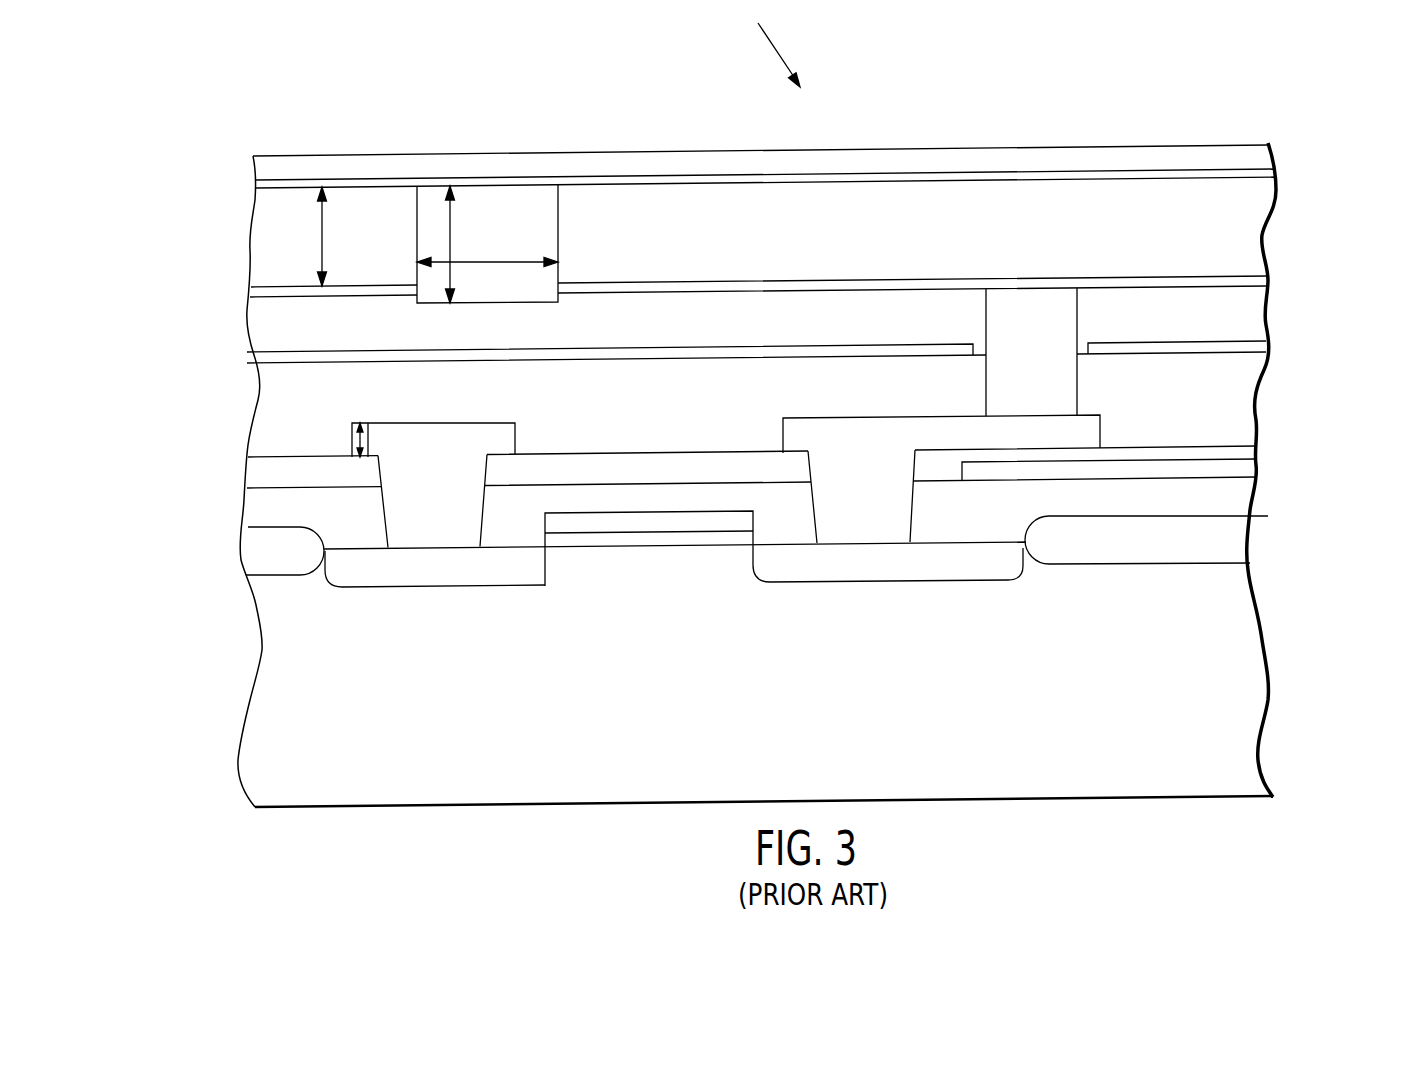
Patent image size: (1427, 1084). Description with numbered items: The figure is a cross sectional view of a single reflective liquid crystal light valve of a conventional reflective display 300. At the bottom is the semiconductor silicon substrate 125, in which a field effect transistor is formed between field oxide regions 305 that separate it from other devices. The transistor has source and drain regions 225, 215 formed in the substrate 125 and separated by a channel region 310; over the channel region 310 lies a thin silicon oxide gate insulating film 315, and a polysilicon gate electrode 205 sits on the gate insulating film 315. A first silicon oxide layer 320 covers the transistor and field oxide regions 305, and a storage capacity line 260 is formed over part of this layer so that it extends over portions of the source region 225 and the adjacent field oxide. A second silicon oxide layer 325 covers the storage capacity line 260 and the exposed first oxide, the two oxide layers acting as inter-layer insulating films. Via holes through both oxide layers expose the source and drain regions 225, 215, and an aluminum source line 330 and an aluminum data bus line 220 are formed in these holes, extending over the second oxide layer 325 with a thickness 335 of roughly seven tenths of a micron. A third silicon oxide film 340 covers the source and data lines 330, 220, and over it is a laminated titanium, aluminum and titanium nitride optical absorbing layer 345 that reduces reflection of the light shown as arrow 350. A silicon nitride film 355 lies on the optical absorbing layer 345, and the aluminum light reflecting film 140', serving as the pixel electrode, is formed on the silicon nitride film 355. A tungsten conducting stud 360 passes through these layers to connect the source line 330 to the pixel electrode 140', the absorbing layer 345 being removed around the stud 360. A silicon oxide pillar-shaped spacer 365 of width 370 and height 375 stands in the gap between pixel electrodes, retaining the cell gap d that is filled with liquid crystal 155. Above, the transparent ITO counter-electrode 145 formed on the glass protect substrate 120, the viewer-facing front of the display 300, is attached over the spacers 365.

The reflective display 300 is at (1315, 752).
The substrate 125 is at (1247, 645).
The glass protect substrate 120 is at (1265, 143).
The counter-electrode 145 is at (1262, 170).
The liquid crystal 155 is at (1247, 228).
The light reflecting film 140' is at (813, 279).
The silicon nitride film 355 is at (1247, 312).
The optical absorbing layer 345 is at (1247, 348).
The conducting stud 360 is at (1023, 298).
The pillar-shaped spacer 365 is at (486, 213).
The width 370 is at (520, 257).
The height 375 is at (448, 243).
The cell gap d is at (322, 237).
The arrow 350 is at (777, 51).
The third silicon oxide film 340 is at (1247, 398).
The data bus line 220 is at (505, 437).
The thickness 335 is at (352, 447).
The source line 330 is at (790, 432).
The second SiO2 layer 325 is at (1255, 455).
The storage capacity line 260 is at (1165, 465).
The SiO2 layer 320 is at (1250, 495).
The field oxide region 305 is at (1222, 535).
The channel region 310 is at (641, 568).
The drain region 215 is at (442, 573).
The polysilicon gate electrode 205 is at (583, 527).
The gate insulating film 315 is at (692, 540).
The source region 225 is at (857, 568).